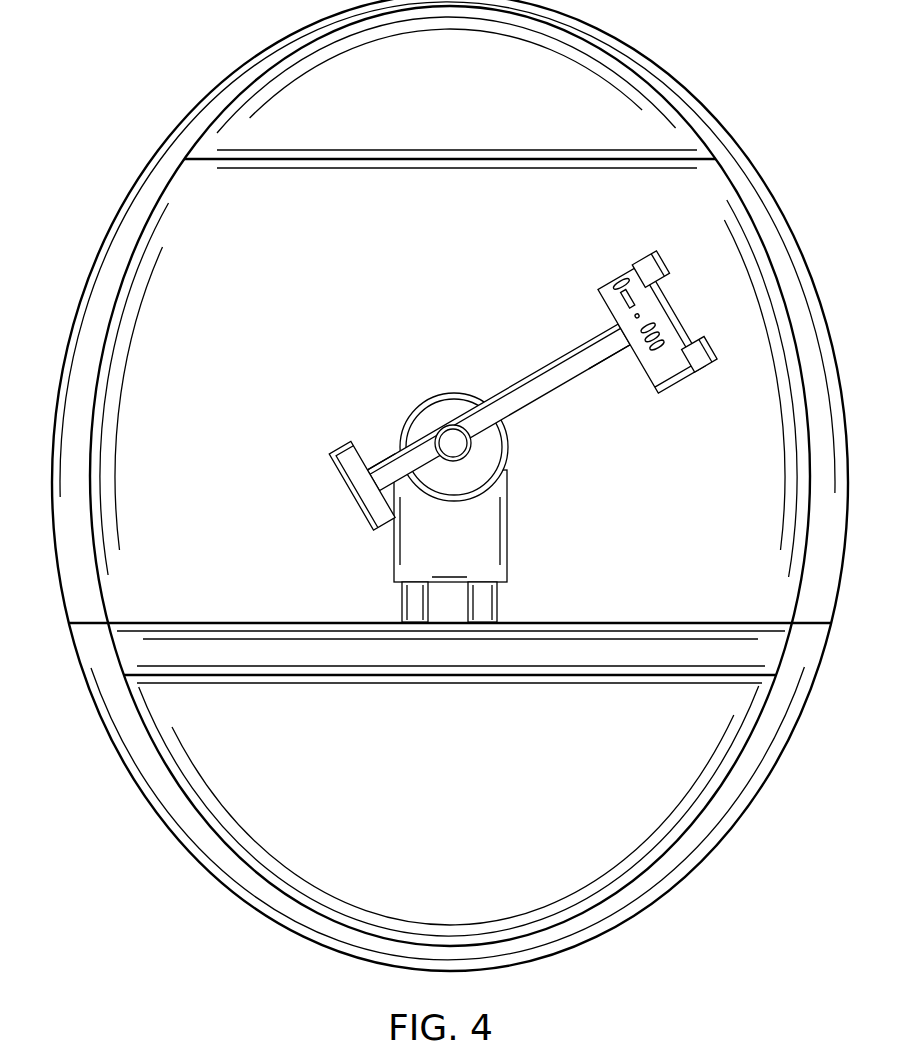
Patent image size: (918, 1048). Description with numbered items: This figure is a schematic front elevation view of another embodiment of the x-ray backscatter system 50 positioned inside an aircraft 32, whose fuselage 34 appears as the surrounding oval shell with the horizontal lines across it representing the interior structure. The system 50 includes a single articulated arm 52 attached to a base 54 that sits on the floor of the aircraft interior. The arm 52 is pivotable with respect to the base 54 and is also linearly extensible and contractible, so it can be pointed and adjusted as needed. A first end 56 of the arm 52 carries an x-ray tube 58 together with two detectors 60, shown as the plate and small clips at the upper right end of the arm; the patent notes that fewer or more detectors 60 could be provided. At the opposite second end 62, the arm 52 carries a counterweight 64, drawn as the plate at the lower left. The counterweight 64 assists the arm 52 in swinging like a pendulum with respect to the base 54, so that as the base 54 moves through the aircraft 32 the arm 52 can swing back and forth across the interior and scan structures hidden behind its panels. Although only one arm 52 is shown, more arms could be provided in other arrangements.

The aircraft 32 is at (468, 834).
The fuselage 34 is at (116, 727).
The system 50 is at (541, 410).
The articulated arm 52 is at (543, 380).
The base 54 is at (468, 560).
The first end 56 is at (608, 343).
The x-ray tube 58 is at (650, 323).
The detectors 60 is at (653, 270).
The second end 62 is at (385, 468).
The counterweight 64 is at (352, 478).